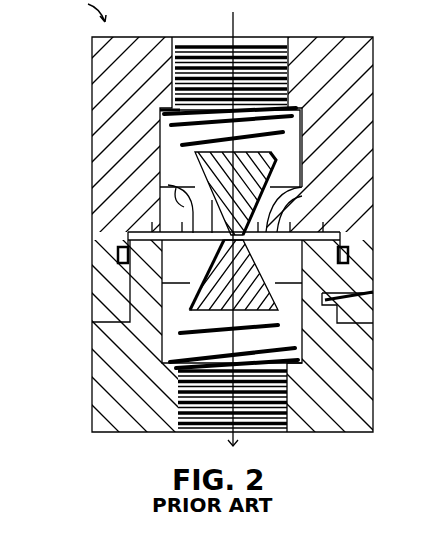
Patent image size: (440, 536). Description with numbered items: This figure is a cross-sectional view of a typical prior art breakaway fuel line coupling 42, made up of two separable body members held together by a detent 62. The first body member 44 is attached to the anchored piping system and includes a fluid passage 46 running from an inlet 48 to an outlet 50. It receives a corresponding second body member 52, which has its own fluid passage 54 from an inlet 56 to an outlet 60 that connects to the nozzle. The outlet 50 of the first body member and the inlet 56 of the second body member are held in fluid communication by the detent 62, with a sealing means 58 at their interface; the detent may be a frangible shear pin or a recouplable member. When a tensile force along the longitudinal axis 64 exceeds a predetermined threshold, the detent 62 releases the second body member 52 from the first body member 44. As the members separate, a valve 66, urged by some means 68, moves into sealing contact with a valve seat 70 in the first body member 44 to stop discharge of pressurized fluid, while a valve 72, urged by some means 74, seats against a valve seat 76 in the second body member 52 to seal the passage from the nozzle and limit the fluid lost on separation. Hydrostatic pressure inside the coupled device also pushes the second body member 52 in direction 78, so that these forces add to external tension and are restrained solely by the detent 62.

The prior art fastening assembly 42 is at (73, 11).
The first body member 44 is at (373, 54).
The fluid passage 46 is at (300, 118).
The inlet 48 is at (235, 29).
The outlet 50 is at (318, 205).
The second body member 52 is at (362, 398).
The fluid passage 54 is at (342, 236).
The inlet 56 is at (335, 178).
The sealing means 58 is at (349, 253).
The outlet 60 is at (252, 436).
The detent 62 is at (352, 295).
The longitudinal axis 64 is at (228, 444).
The valve 66 is at (230, 146).
The urging means 68 is at (350, 97).
The valve seat 70 is at (163, 193).
The valve 72 is at (222, 258).
The urging means 74 is at (177, 367).
The valve seat 76 is at (130, 273).
The axial direction 78 is at (163, 213).